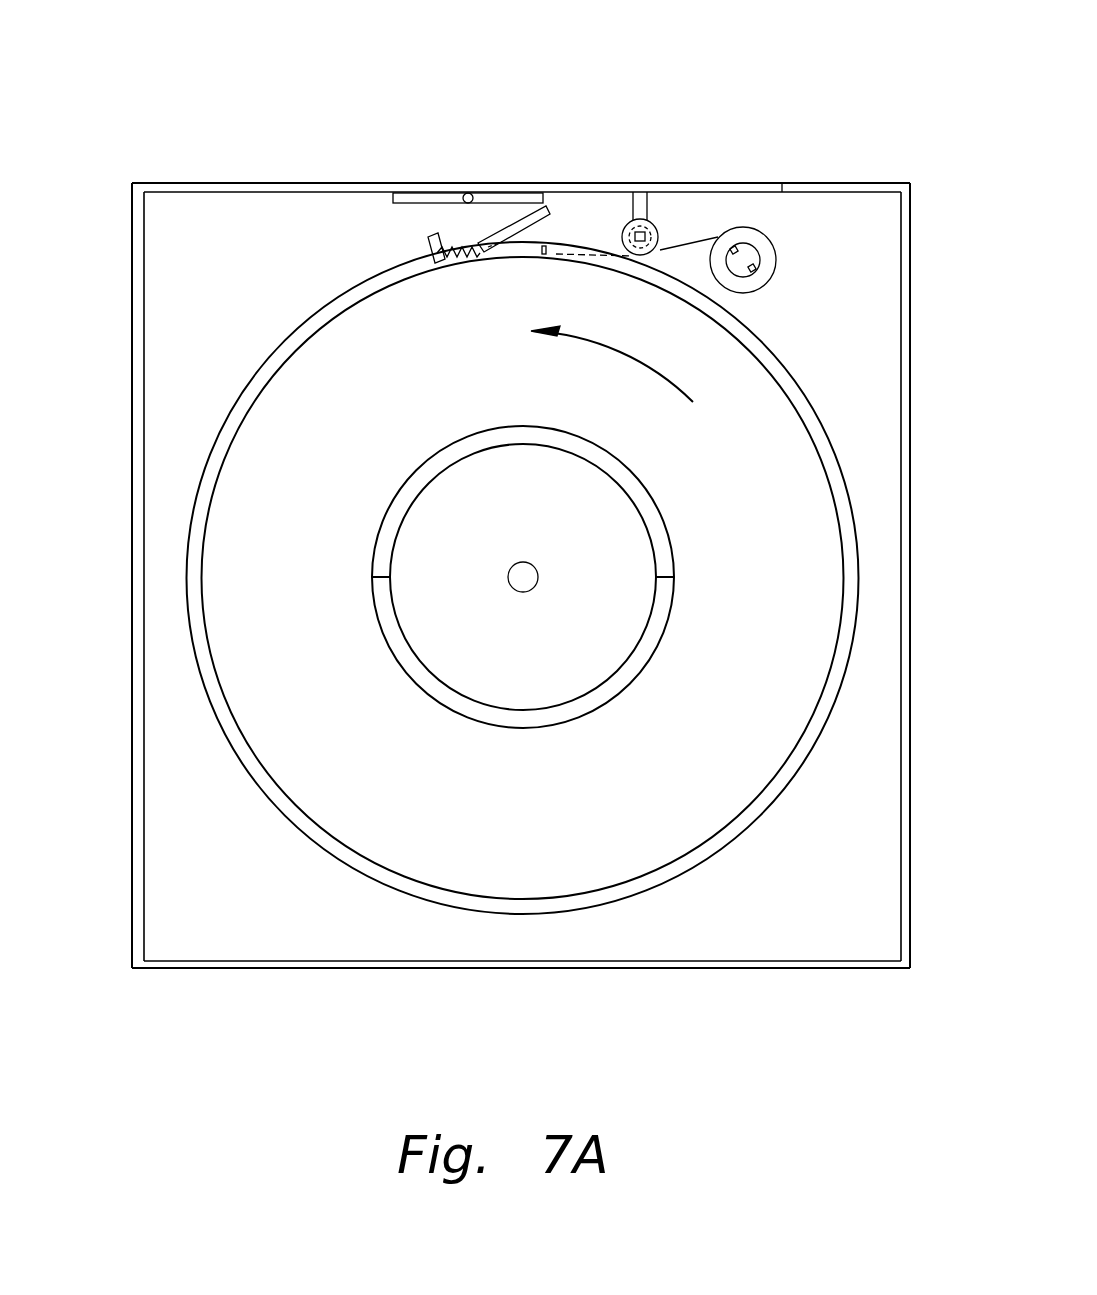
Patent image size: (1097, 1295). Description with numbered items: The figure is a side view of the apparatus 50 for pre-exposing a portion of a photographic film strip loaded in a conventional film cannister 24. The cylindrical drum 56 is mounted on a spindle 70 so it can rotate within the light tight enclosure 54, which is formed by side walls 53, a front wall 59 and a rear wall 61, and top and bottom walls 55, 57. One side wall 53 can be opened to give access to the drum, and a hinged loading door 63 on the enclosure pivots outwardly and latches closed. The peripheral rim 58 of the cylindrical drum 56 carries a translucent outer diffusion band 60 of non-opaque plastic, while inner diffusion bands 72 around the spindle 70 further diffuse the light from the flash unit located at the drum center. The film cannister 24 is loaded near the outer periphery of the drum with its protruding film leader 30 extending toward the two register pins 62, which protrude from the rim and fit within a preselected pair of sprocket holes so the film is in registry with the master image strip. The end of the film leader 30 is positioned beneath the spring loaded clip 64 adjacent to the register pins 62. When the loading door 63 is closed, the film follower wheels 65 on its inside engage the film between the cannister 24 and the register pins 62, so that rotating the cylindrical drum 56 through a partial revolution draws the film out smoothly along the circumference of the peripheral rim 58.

The apparatus 50 is at (414, 102).
The bottom wall 57 is at (132, 238).
The light tight enclosure 54 is at (200, 190).
The front wall 59 is at (260, 190).
The side wall 53 is at (321, 190).
The top wall 55 is at (907, 237).
The rear wall 61 is at (357, 963).
The loading door 63 is at (700, 185).
The film cannister 24 is at (770, 257).
The film follower wheels 65 is at (668, 190).
The spring loaded clip 64 is at (551, 218).
The register pins 62 is at (546, 245).
The film leader 30 is at (580, 255).
The outer diffusion band 60 is at (799, 753).
The peripheral rim 58 is at (688, 870).
The cylindrical drum 56 is at (702, 788).
The inner diffusion band 72 is at (647, 510).
The spindle 70 is at (521, 580).